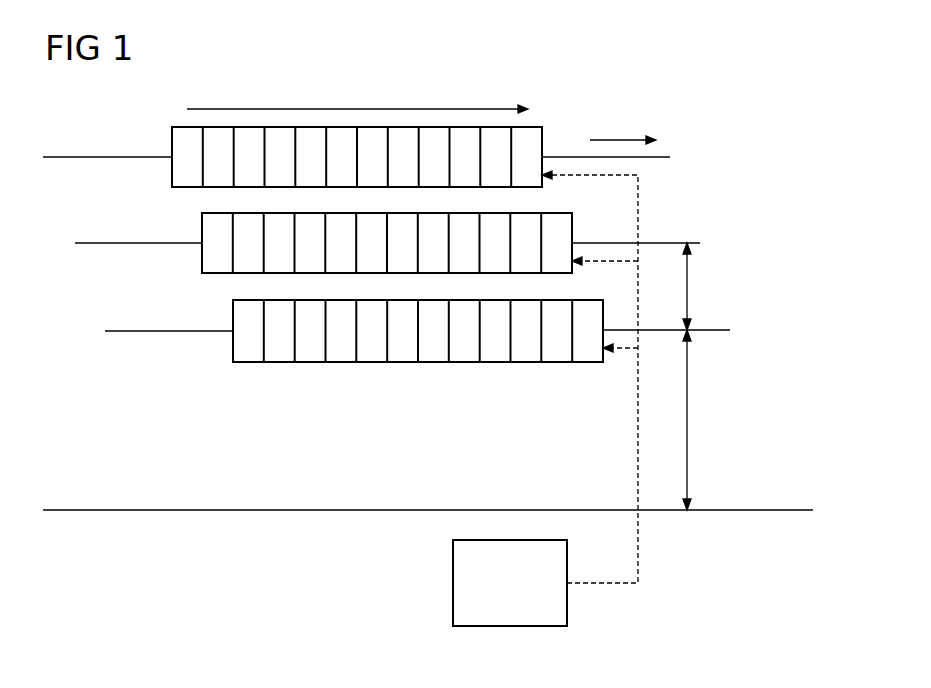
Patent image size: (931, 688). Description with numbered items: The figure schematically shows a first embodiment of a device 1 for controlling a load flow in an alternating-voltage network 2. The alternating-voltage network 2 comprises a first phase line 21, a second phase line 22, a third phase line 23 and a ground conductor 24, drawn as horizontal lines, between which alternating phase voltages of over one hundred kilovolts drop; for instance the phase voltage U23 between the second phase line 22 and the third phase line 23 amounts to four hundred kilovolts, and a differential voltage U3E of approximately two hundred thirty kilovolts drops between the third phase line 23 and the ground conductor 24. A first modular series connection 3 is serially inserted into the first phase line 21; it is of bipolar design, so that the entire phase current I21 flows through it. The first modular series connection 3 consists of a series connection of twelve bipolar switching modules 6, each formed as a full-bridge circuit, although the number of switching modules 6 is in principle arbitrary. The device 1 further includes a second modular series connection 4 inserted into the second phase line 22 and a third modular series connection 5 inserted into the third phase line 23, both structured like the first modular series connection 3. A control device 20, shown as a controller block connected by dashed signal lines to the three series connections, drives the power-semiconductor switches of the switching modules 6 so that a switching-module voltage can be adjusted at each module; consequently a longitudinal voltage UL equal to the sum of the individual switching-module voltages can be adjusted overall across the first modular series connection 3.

The device 1 is at (530, 62).
The alternating-voltage network 2 is at (160, 371).
The first modular series connection 3 is at (172, 143).
The second modular series connection 4 is at (202, 234).
The third modular series connection 5 is at (233, 320).
The switching module 6 is at (593, 346).
The control device 20 is at (453, 583).
The first phase line 21 is at (80, 157).
The second phase line 22 is at (98, 243).
The third phase line 23 is at (126, 331).
The ground conductor 24 is at (135, 510).
The longitudinal voltage UL is at (334, 109).
The phase current I21 is at (617, 140).
The phase voltage U23 is at (687, 290).
The differential voltage U3E is at (687, 428).